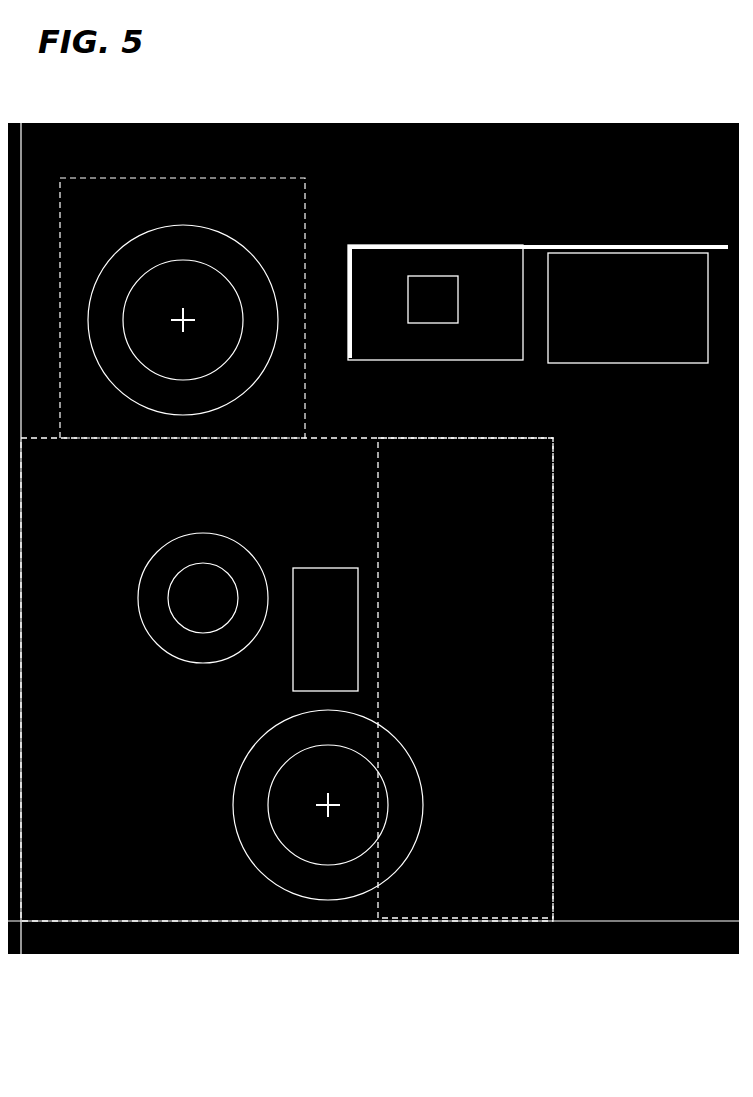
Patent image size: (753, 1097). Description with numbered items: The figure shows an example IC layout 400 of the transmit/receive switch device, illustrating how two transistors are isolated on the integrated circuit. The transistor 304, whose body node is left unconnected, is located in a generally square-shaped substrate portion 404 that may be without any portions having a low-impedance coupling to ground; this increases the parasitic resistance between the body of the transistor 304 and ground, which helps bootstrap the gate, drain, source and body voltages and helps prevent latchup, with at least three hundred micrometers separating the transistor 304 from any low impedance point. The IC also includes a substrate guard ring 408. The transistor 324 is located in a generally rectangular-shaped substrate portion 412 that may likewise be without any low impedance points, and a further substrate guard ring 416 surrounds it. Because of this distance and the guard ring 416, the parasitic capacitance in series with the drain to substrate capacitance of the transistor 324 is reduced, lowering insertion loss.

The IC layout 400 is at (563, 98).
The substrate guard ring 416 is at (459, 238).
The transistor 324 is at (425, 268).
The substrate portion 412 is at (481, 250).
The substrate guard ring 408 is at (545, 526).
The transistor 304 is at (341, 582).
The substrate portion 404 is at (287, 679).